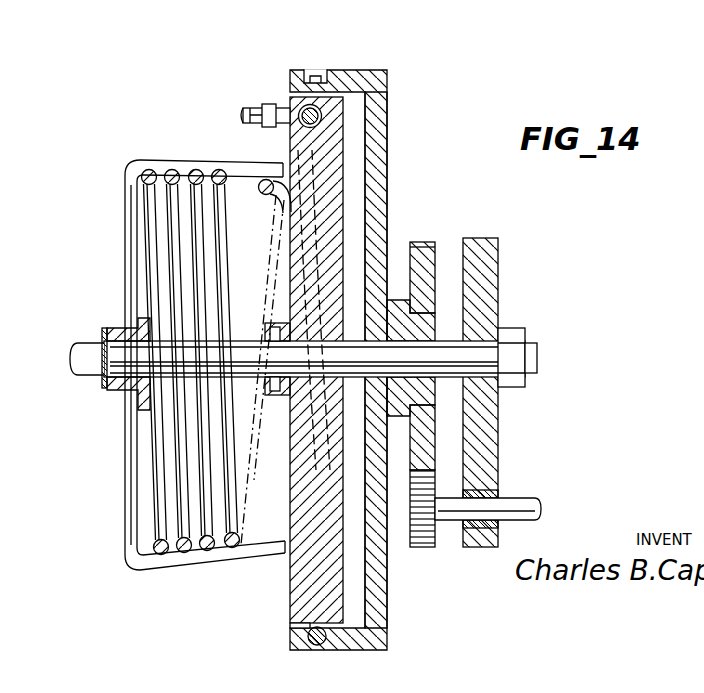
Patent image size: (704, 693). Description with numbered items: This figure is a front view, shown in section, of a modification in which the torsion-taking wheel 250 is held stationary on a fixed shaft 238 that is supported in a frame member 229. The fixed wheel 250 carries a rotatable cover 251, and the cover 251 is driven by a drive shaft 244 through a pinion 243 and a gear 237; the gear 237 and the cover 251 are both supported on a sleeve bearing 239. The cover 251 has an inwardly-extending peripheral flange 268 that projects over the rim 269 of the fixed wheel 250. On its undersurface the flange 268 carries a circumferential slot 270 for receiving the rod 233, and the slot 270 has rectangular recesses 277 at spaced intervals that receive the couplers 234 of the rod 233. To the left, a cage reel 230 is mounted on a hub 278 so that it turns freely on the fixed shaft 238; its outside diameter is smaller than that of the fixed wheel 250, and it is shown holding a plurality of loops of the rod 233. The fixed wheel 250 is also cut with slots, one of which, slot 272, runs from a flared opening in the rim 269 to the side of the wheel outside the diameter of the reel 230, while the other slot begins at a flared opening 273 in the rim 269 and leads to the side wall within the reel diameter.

The frame member 229 is at (487, 268).
The cage reel 230 is at (133, 490).
The rod 233 is at (197, 178).
The couplers 234 is at (305, 508).
The gear 237 is at (418, 243).
The fixed shaft 238 is at (540, 353).
The sleeve bearing 239 is at (417, 337).
The pinion 243 is at (430, 540).
The drive shaft 244 is at (525, 507).
The torsion-taking wheel 250 is at (328, 147).
The rotatable cover 251 is at (380, 193).
The peripheral flange 268 is at (345, 72).
The rim 269 is at (292, 618).
The circumferential slot 270 is at (320, 646).
The slot 272 is at (322, 118).
The flared opening 273 is at (305, 432).
The rectangular recesses 277 is at (311, 70).
The hub 278 is at (117, 380).